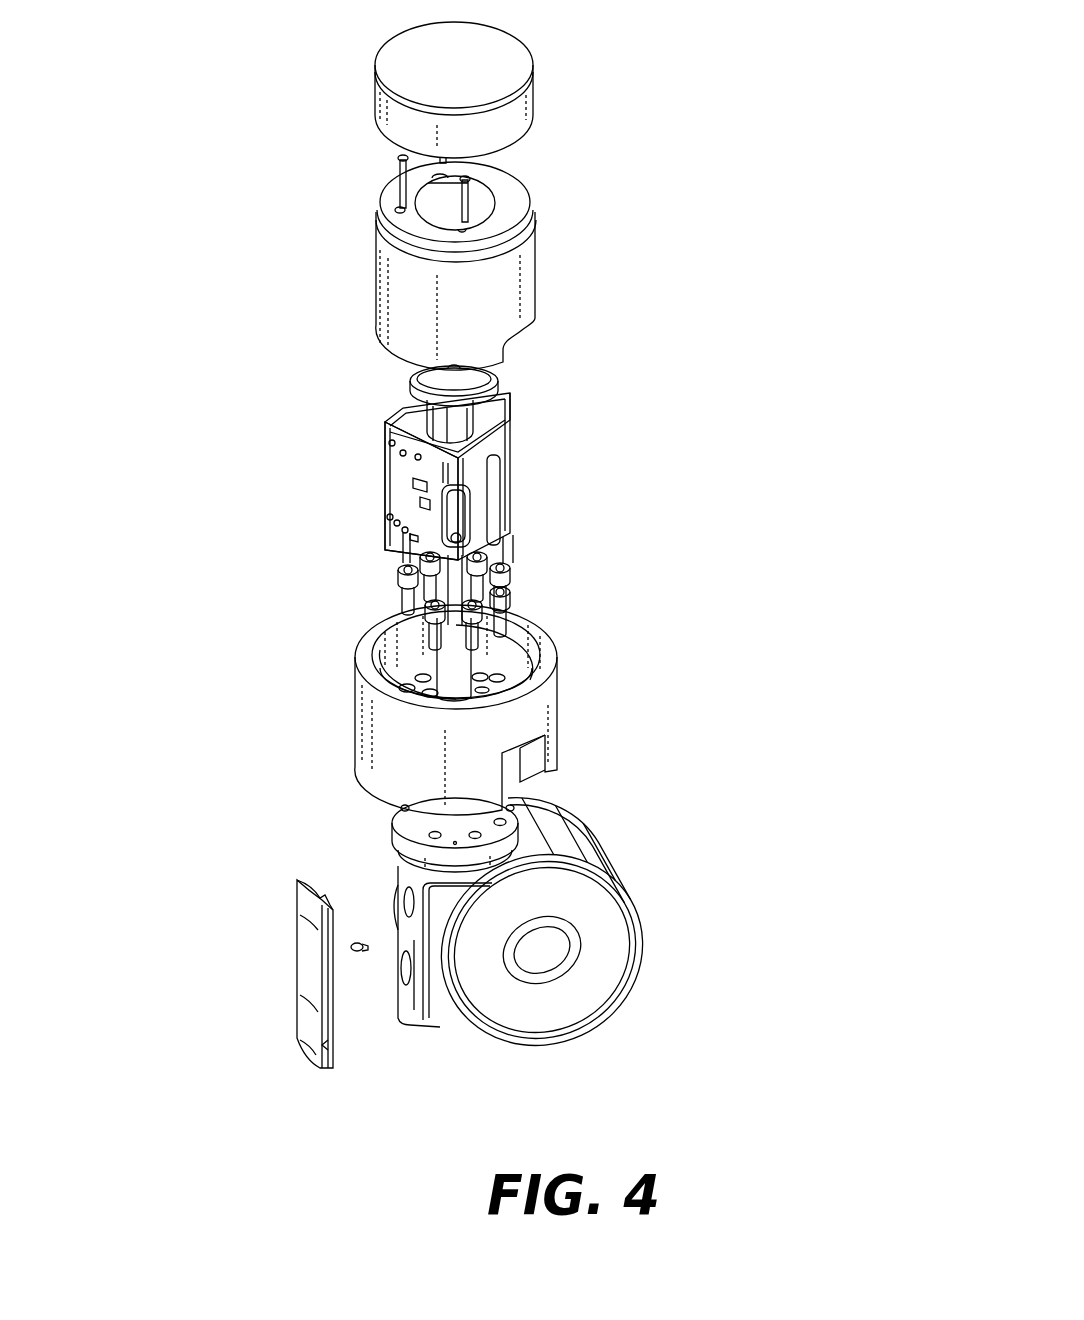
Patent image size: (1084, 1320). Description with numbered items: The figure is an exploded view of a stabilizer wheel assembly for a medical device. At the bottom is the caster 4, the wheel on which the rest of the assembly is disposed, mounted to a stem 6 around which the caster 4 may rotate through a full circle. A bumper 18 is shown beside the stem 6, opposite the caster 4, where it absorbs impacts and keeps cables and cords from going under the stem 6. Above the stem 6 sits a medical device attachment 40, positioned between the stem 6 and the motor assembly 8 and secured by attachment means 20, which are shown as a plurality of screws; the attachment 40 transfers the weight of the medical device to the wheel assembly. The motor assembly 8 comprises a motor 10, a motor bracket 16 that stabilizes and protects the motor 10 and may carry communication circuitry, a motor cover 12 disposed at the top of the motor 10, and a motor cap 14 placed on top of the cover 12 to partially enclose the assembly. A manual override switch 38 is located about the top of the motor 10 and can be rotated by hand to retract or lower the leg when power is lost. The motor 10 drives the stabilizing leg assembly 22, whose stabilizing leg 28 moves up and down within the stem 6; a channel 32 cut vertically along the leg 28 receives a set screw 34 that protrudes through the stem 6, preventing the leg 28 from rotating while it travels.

The caster 4 is at (610, 960).
The stem 6 is at (408, 862).
The motor assembly 8 is at (700, 349).
The motor 10 is at (515, 430).
The motor cover 12 is at (506, 297).
The motor cap 14 is at (533, 93).
The motor bracket 16 is at (387, 428).
The bumper 18 is at (305, 1022).
The attachment means 20 is at (512, 558).
The stabilizing leg assembly 22 is at (500, 655).
The stabilizing leg 28 is at (460, 677).
The channel 32 is at (437, 655).
The set screw 34 is at (355, 955).
The manual override switch 38 is at (500, 372).
The medical device attachment 40 is at (552, 697).